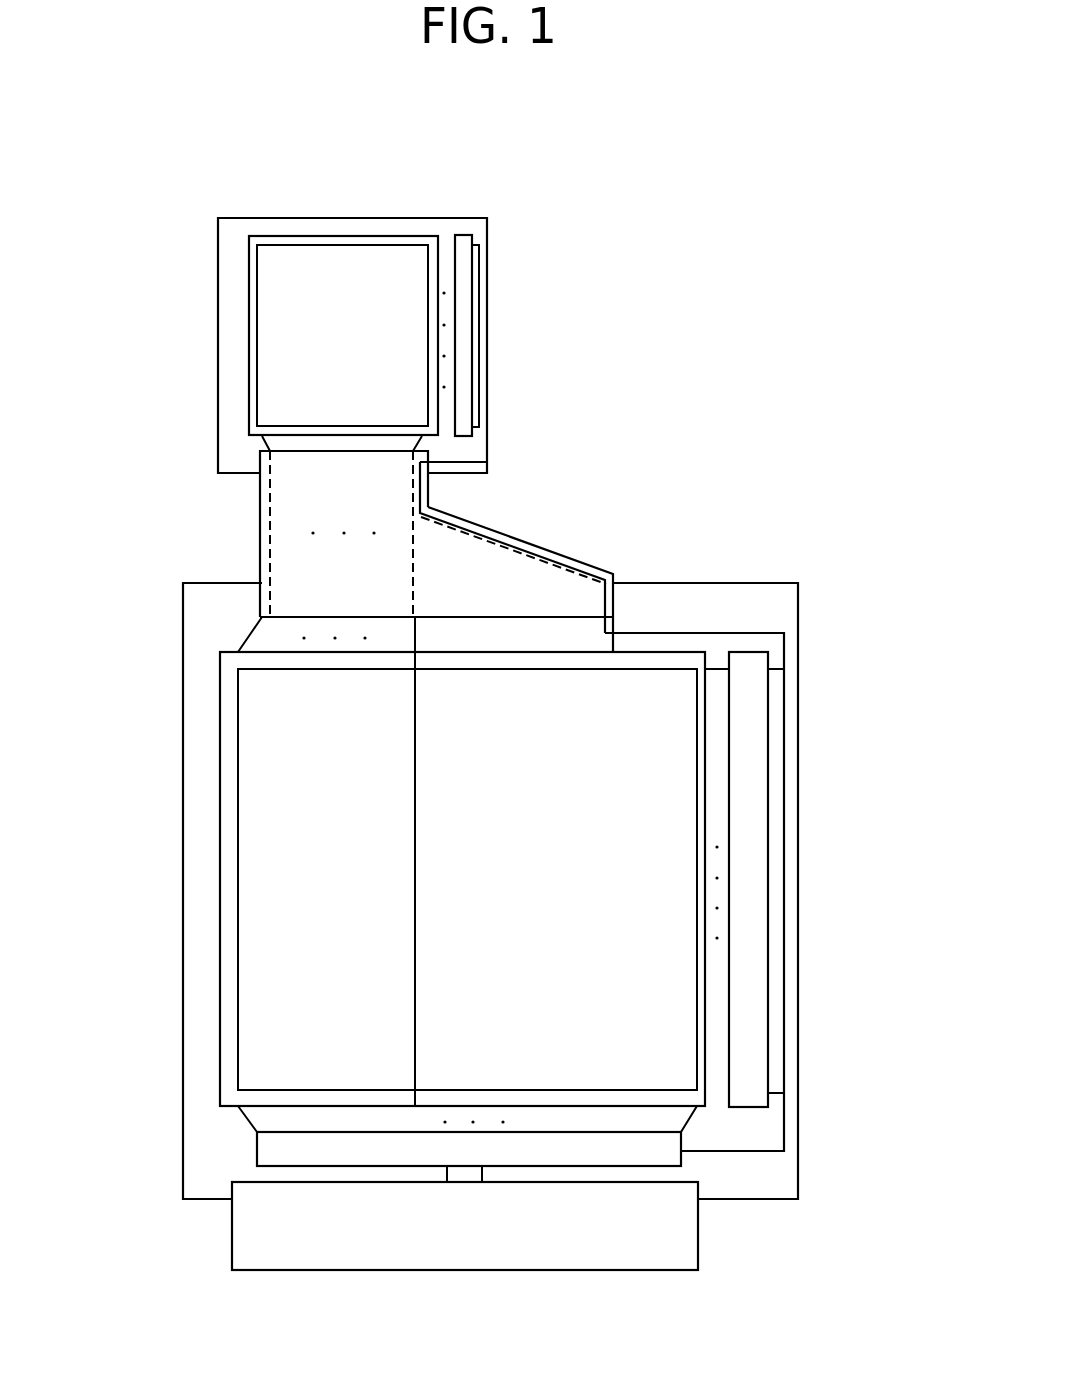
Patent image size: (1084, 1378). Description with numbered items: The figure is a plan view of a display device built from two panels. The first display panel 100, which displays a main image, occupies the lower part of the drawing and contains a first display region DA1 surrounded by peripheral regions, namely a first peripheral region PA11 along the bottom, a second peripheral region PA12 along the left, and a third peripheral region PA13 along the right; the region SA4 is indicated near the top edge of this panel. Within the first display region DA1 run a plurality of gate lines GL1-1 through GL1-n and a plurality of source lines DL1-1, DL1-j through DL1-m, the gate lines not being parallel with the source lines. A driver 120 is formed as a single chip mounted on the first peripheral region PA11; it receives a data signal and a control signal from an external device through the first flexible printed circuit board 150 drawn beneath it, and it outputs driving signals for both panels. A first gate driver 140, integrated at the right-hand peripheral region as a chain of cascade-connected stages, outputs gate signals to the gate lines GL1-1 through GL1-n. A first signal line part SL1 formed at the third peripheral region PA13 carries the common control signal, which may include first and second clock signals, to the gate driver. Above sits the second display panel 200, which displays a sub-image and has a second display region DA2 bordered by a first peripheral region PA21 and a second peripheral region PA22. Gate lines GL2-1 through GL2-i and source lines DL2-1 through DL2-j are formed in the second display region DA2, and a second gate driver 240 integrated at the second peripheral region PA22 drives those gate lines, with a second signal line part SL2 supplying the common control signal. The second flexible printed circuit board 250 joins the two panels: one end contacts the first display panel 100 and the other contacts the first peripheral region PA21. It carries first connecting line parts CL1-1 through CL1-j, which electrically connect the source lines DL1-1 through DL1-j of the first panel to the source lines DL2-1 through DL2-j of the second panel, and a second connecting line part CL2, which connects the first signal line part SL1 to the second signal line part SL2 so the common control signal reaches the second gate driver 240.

The first display panel 100 is at (205, 1042).
The driver 120 is at (572, 1167).
The first gate driver 140 is at (753, 779).
The first flexible printed circuit board 150 is at (700, 1233).
The second display panel 200 is at (407, 217).
The second gate driver 240 is at (462, 272).
The second flexible printed circuit board 250 is at (538, 537).
The first display region DA1 is at (437, 828).
The second display region DA2 is at (278, 301).
The first peripheral region PA11 is at (734, 1180).
The second peripheral region PA12 is at (193, 766).
The third peripheral region PA13 is at (790, 822).
The first peripheral region PA21 is at (244, 454).
The second peripheral region PA22 is at (470, 448).
The gate line GL1-1 is at (500, 1090).
The gate line GL1-n is at (500, 669).
The source line DL1-1 is at (240, 906).
The source line DL1-j is at (416, 906).
The source line DL1-m is at (697, 906).
The gate line GL2-1 is at (365, 425).
The gate line GL2-i is at (323, 244).
The source line DL2-1 is at (260, 341).
The source line DL2-j is at (427, 286).
The first connecting line part CL1-1 is at (270, 533).
The first connecting line part CL1-j is at (413, 537).
The second connecting line part CL2 is at (582, 572).
The first signal line part SL1 is at (782, 850).
The second signal line part SL2 is at (473, 327).
The fourth side area SA4 is at (705, 604).